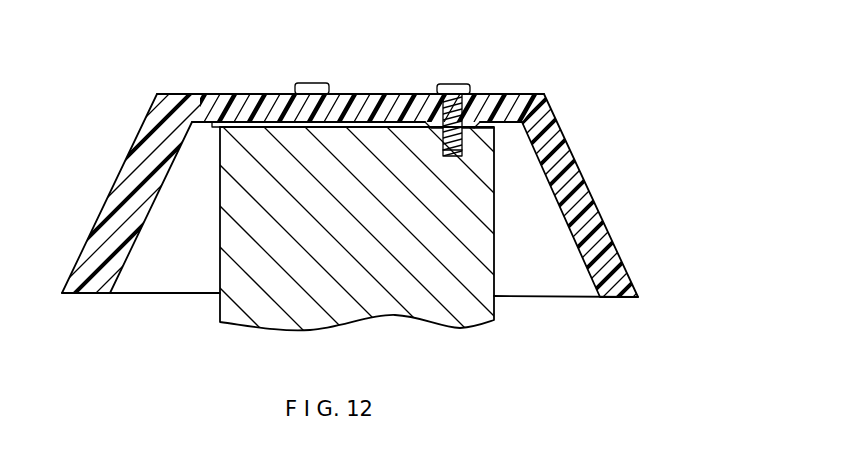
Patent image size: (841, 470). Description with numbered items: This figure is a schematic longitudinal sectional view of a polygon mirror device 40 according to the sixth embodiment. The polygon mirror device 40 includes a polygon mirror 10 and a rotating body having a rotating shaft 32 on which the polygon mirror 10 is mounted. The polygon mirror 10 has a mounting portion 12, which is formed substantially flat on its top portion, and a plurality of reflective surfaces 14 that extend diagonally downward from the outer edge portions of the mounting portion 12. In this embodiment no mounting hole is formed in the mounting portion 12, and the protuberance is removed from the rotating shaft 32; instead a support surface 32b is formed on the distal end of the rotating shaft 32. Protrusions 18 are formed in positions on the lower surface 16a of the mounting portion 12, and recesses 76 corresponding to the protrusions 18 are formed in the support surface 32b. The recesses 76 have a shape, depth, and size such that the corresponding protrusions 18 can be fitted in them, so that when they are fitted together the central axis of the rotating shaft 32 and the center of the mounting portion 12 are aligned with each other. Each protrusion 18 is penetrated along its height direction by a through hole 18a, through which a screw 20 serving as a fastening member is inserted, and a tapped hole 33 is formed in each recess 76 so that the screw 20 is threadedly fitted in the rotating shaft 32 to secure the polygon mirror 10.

The polygon mirror 10 is at (612, 179).
The mounting portion 12 is at (220, 94).
The reflective surfaces 14 is at (114, 178).
The lower surface 16a is at (204, 123).
The protrusion 18 is at (331, 126).
The through hole 18a is at (440, 97).
The screw 20 is at (304, 83).
The rotating shaft 32 is at (487, 250).
The support surface 32b is at (387, 127).
The tapped hole 33 is at (468, 146).
The polygon mirror device 40 is at (566, 114).
The recess 76 is at (464, 122).